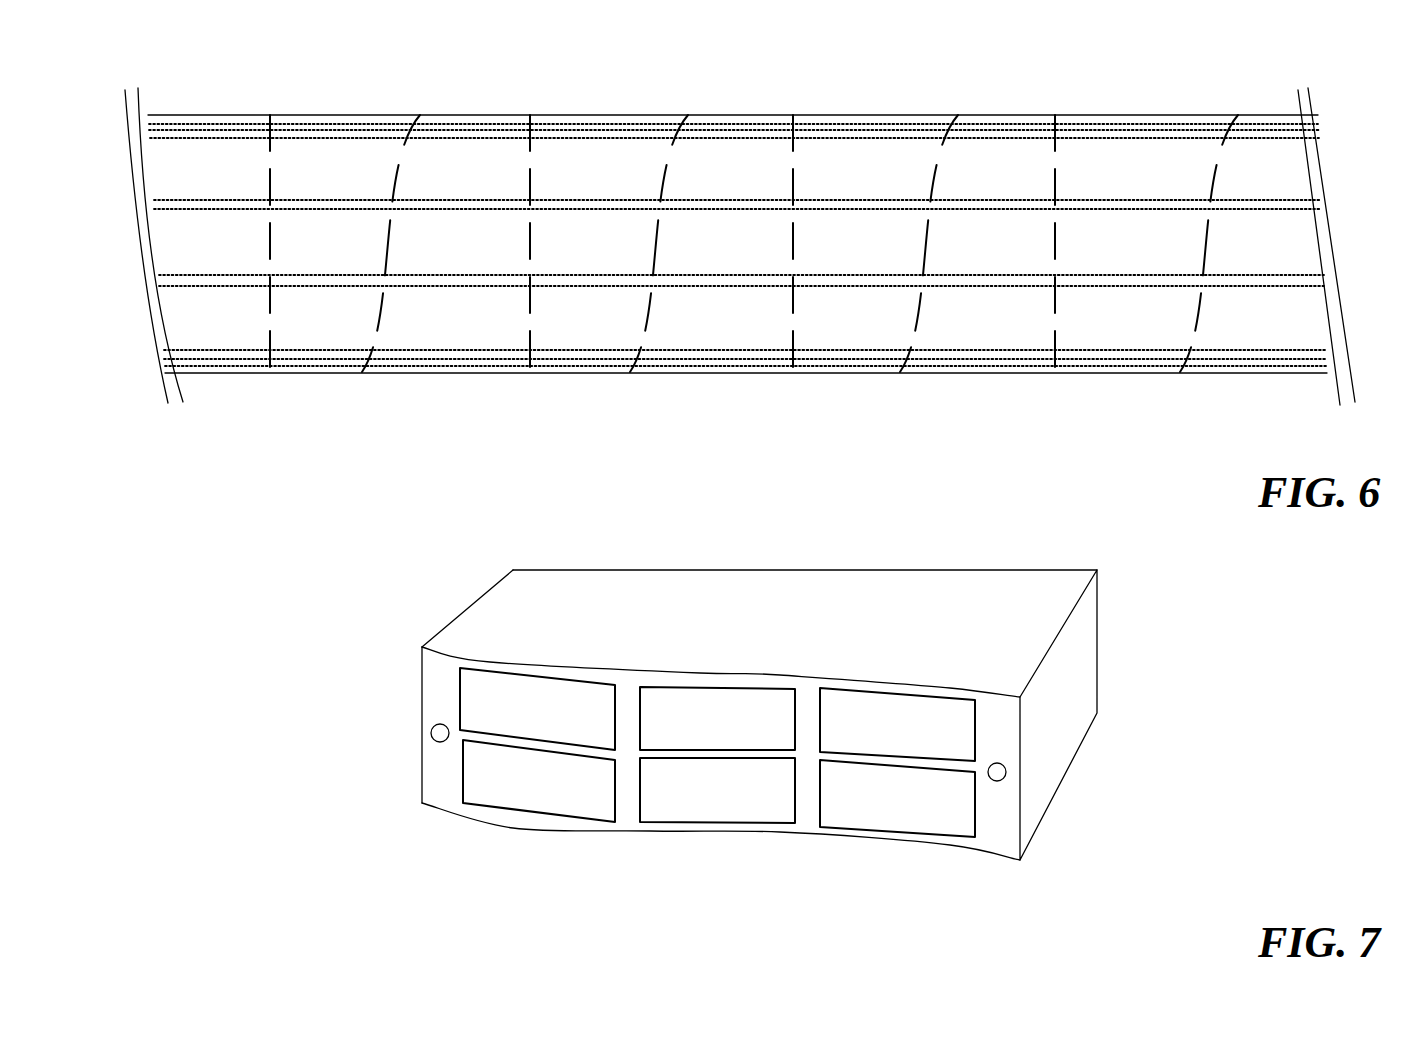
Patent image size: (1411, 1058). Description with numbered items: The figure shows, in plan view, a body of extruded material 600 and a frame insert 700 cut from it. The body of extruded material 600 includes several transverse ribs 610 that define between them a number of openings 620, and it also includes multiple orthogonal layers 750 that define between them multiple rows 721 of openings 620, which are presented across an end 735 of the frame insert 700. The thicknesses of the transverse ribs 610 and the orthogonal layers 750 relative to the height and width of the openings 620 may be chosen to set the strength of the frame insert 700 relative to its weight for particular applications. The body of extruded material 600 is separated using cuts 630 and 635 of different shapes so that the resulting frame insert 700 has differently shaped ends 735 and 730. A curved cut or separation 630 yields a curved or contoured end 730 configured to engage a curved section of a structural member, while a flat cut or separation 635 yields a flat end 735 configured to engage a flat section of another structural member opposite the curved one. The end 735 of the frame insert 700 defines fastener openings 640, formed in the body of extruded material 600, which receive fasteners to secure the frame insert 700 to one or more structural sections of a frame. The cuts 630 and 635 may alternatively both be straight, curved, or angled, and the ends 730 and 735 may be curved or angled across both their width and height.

In FIG. 6, the body of extruded material 600 is at (223, 105).
In FIG. 6, the transverse ribs 610 is at (370, 205).
In FIG. 7, the transverse ribs 610 is at (431, 788).
In FIG. 6, the openings 620 is at (517, 235).
In FIG. 7, the openings 620 is at (632, 722).
In FIG. 6, the curved cut or separation 630 is at (663, 302).
In FIG. 6, the flat cut or separation 635 is at (272, 290).
In FIG. 6, the fastener openings 640 is at (903, 122).
In FIG. 7, the fastener openings 640 is at (437, 724).
In FIG. 7, the frame insert 700 is at (437, 630).
In FIG. 7, the rows of openings 721 is at (421, 777).
In FIG. 7, the curved end 730 is at (995, 838).
In FIG. 7, the flat end 735 is at (823, 562).
In FIG. 7, the orthogonal layers 750 is at (976, 766).